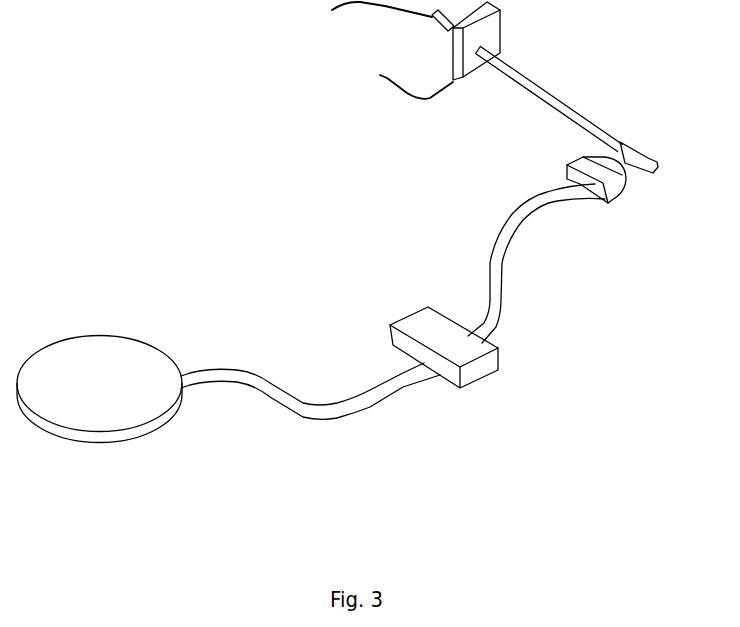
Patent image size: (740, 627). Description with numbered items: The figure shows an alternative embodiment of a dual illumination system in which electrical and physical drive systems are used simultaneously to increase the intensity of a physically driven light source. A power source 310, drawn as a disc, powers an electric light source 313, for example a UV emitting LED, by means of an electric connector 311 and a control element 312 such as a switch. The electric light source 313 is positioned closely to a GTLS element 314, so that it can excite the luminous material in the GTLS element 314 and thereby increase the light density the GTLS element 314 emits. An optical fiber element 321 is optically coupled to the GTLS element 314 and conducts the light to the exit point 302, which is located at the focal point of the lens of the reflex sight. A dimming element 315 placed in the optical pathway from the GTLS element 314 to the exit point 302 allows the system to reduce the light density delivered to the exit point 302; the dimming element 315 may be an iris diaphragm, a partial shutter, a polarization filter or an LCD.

The exit point 302 is at (332, 10).
The dimming element 315 is at (380, 75).
The optical fiber element 321 is at (523, 78).
The GTLS element 314 is at (633, 147).
The electric light source 313 is at (585, 163).
The power source 310 is at (123, 383).
The electric connector 311 is at (287, 395).
The control element 312 is at (460, 348).